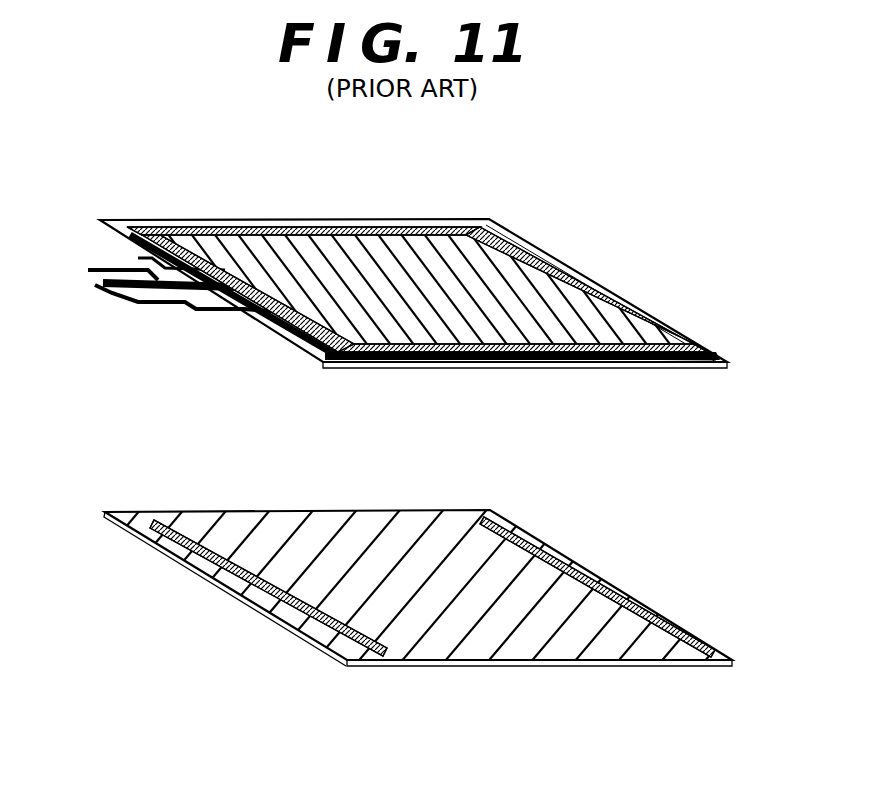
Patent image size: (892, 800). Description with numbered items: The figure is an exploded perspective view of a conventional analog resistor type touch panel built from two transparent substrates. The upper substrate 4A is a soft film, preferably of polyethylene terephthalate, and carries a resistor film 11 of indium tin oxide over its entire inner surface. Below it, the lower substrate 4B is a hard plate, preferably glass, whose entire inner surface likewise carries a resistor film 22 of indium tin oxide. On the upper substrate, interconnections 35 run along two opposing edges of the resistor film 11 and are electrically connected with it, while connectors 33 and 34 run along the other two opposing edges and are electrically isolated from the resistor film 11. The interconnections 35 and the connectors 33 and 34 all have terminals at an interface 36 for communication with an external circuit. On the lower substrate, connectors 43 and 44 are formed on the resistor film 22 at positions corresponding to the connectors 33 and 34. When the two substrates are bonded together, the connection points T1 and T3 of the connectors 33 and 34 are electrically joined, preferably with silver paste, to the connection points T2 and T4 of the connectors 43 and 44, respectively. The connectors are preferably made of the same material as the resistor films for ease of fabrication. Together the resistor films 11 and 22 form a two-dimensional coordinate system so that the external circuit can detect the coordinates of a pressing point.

The upper substrate 4A is at (490, 219).
The lower substrate 4B is at (659, 663).
The resistor film 11 is at (388, 232).
The resistor film 22 is at (546, 646).
The connector 33 is at (258, 322).
The connector 34 is at (620, 298).
The interconnections 35 is at (293, 226).
The interface 36 is at (100, 282).
The connector 43 is at (230, 578).
The connector 44 is at (612, 597).
The connection point T1 is at (200, 227).
The connection point T2 is at (190, 527).
The connection point T3 is at (540, 258).
The connection point T4 is at (534, 541).